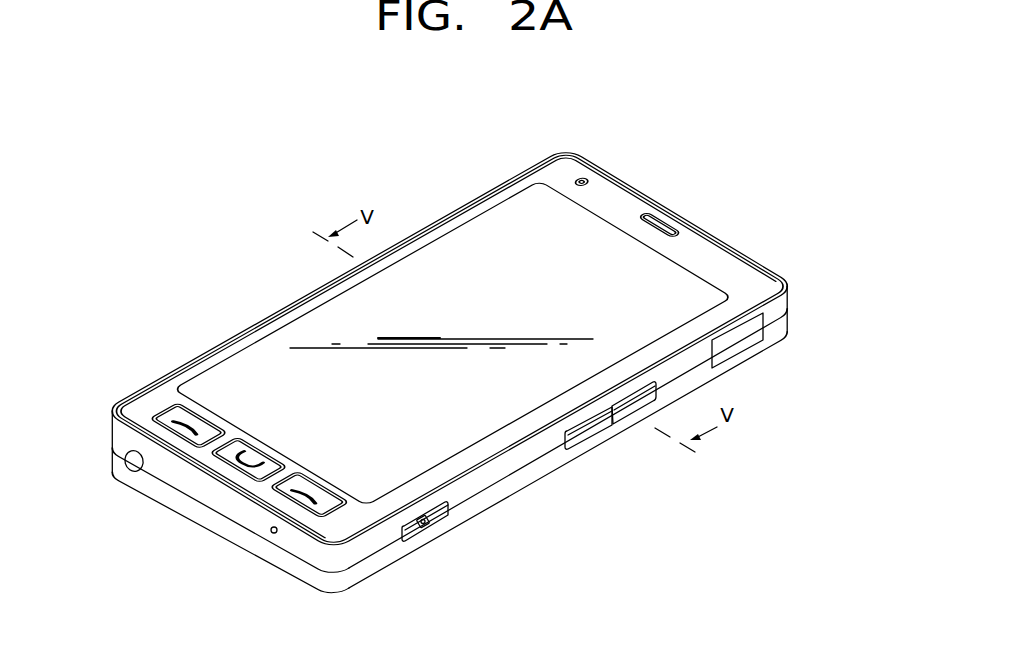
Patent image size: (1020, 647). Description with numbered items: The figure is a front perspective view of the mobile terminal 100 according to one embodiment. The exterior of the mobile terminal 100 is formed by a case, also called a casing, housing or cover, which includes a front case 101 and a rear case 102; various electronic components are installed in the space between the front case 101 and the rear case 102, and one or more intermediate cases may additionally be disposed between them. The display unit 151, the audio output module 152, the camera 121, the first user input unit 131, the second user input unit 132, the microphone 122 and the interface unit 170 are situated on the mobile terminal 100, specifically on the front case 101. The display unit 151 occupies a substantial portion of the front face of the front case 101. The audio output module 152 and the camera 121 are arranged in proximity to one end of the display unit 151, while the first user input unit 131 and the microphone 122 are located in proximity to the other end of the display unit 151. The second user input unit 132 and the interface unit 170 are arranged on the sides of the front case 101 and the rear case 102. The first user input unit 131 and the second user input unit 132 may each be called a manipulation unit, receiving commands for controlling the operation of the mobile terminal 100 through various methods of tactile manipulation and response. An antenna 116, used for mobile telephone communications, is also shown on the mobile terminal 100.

The mobile terminal 100 is at (296, 265).
The front case 101 is at (780, 303).
The rear case 102 is at (781, 323).
The antenna 116 is at (130, 469).
The camera 121 is at (588, 180).
The microphone 122 is at (271, 533).
The first user input unit 131 is at (163, 412).
The second user input unit 132 is at (590, 435).
The display unit 151 is at (277, 338).
The audio output module 152 is at (661, 223).
The interface unit 170 is at (738, 343).